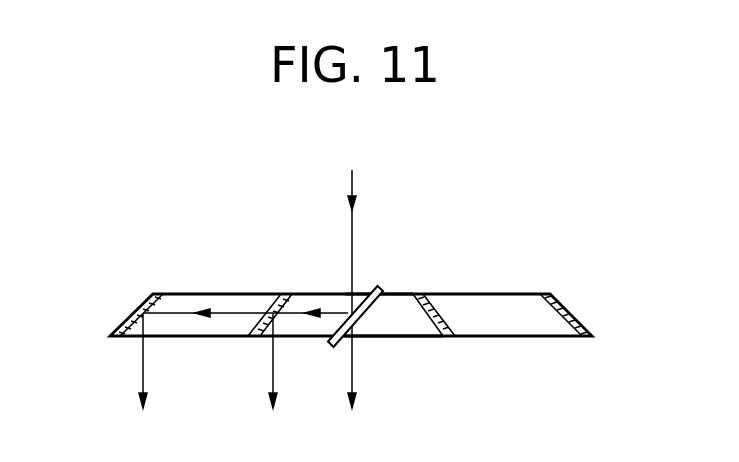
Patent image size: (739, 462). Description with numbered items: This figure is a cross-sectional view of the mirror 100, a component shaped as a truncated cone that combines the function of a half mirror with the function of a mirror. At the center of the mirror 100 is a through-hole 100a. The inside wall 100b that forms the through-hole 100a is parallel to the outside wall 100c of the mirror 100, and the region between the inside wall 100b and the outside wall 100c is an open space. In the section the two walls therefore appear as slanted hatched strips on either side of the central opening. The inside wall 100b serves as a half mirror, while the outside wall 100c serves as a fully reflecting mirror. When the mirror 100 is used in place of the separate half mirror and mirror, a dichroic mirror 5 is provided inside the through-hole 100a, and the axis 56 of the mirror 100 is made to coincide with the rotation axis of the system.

The dichroic mirror 5 is at (365, 292).
The axis of the mirror 56 is at (353, 190).
The mirror 100 is at (530, 338).
The through-hole 100a is at (385, 318).
The inside wall 100b is at (432, 320).
The outside wall 100c is at (567, 313).